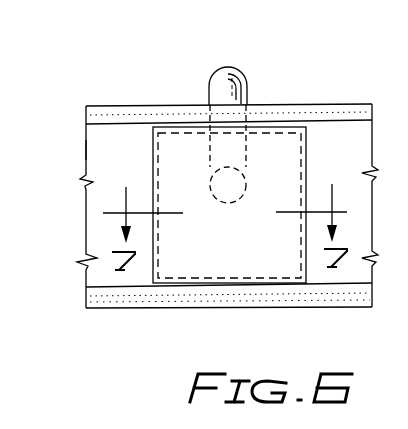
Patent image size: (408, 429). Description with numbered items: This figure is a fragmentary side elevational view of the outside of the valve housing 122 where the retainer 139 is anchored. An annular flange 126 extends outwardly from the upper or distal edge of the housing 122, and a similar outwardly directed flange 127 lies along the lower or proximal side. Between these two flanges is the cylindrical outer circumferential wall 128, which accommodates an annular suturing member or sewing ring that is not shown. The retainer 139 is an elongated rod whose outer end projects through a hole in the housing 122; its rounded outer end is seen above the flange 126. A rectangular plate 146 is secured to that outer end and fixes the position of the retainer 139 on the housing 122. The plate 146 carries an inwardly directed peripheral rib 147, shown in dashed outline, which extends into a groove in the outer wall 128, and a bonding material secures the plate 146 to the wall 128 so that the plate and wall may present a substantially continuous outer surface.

The housing 122 is at (99, 103).
The annular flange 126 is at (145, 113).
The outwardly directed flange 127 is at (115, 303).
The cylindrical outer circumferential wall 128 is at (110, 165).
The retainer 139 is at (231, 64).
The rectangular plate 146 is at (282, 153).
The peripheral rib 147 is at (303, 170).